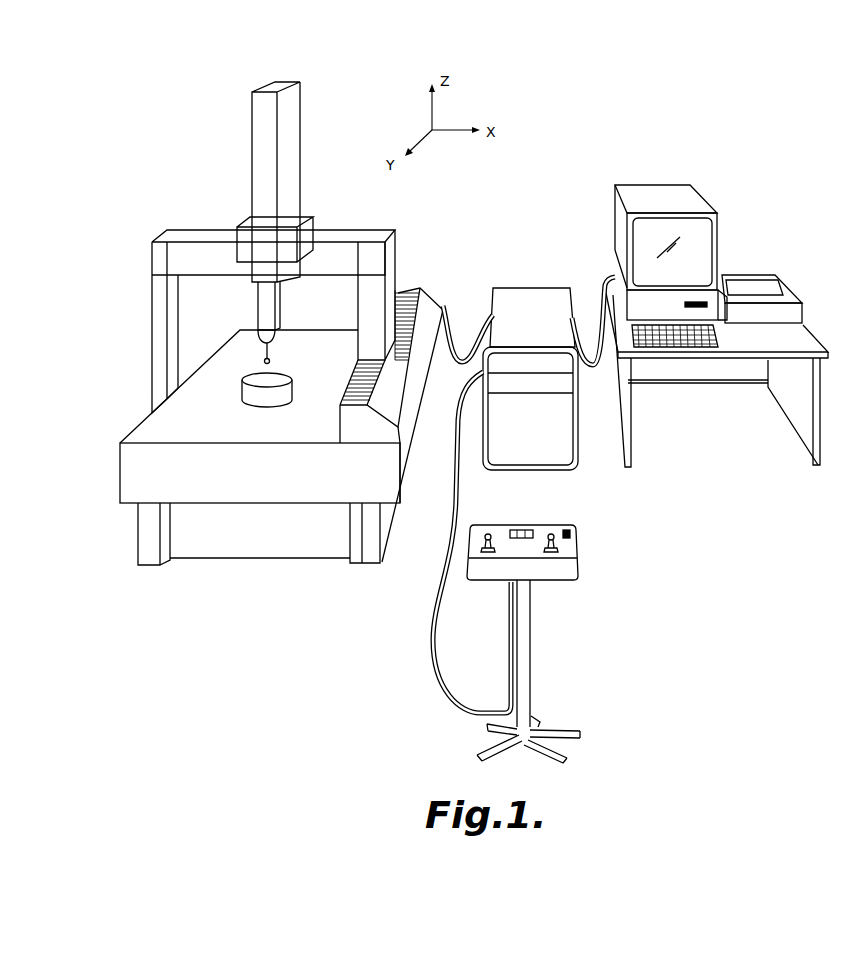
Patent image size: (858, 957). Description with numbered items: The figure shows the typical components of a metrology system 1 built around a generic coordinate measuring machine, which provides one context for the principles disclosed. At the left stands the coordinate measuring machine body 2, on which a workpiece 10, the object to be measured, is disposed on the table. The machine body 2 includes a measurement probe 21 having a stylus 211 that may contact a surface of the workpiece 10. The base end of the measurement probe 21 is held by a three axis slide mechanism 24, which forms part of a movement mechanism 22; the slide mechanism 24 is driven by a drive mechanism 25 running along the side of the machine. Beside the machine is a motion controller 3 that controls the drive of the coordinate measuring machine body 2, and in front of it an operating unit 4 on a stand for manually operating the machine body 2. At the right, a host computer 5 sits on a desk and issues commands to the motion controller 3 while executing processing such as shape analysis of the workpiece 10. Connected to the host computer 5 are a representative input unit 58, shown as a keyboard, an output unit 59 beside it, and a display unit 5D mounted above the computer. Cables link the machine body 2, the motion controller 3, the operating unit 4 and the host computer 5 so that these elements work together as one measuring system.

The metrology system 1 is at (671, 134).
The coordinate measuring machine body 2 is at (124, 106).
The movement mechanism 22 is at (124, 196).
The three axis slide mechanism 24 is at (295, 127).
The drive mechanism 25 is at (430, 304).
The measurement probe 21 is at (276, 336).
The stylus 211 is at (271, 362).
The workpiece 10 is at (236, 422).
The motion controller 3 is at (540, 313).
The operating unit 4 is at (567, 552).
The host computer 5 is at (697, 298).
The display unit 5D is at (690, 242).
The input unit 58 is at (693, 338).
The output unit 59 is at (793, 298).